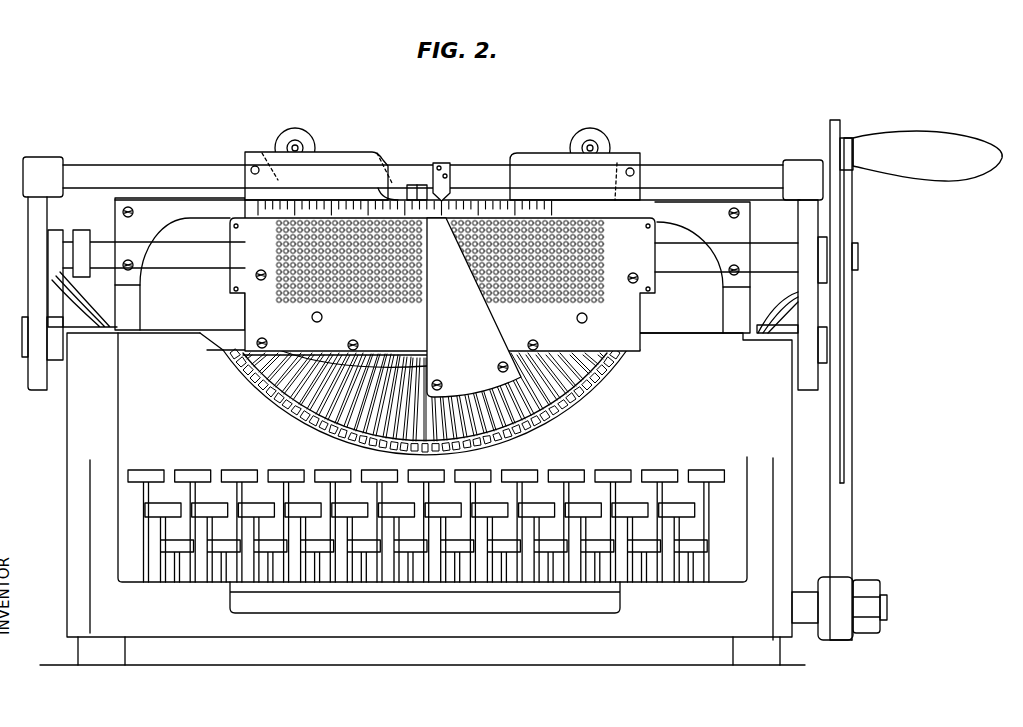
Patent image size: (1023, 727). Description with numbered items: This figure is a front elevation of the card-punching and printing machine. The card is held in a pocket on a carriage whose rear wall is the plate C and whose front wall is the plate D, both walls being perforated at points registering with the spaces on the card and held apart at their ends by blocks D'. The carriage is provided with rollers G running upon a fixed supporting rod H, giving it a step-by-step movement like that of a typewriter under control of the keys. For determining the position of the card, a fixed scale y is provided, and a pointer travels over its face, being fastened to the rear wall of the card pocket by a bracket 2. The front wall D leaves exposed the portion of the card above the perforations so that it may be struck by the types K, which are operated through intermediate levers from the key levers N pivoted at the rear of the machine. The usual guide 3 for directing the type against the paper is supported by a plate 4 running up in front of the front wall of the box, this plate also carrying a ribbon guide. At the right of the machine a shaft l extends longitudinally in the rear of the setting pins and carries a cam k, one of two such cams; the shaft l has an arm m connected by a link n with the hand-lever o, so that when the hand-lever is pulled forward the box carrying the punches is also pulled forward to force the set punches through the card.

The fixed supporting rod H is at (208, 176).
The rollers G is at (302, 140).
The bracket 2 is at (336, 176).
The guide 3 is at (443, 163).
The rear wall of the pocket C is at (520, 153).
The blocks D' is at (631, 156).
The cam k is at (79, 238).
The fixed scale y is at (272, 208).
The shaft l is at (183, 257).
The front wall of the pocket D is at (442, 284).
The plate 4 is at (474, 307).
The types K is at (421, 446).
The key levers N is at (248, 494).
The arm m is at (835, 212).
The link n is at (836, 369).
The hand-lever o is at (843, 433).